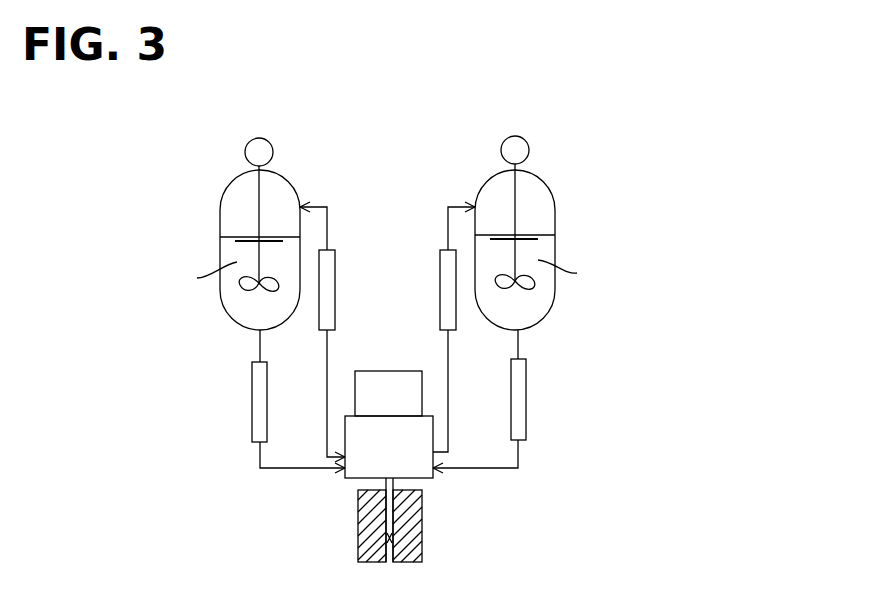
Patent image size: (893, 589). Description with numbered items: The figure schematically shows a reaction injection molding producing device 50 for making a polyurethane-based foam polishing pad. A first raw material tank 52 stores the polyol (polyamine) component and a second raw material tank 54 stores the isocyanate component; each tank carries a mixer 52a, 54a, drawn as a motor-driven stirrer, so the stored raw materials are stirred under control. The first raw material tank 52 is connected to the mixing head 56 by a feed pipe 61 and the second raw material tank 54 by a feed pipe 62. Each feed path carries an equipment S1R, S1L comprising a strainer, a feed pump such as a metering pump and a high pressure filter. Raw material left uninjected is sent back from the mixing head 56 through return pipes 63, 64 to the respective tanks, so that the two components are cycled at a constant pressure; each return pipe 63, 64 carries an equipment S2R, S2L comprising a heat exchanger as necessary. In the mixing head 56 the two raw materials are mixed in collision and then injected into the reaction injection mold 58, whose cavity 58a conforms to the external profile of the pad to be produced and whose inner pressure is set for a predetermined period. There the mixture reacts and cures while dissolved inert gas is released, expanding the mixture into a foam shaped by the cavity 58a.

The producing device 50 is at (128, 150).
The first raw material tank 52 is at (555, 207).
The mixer 52a is at (529, 148).
The second raw material tank 54 is at (220, 205).
The mixer 54a is at (245, 152).
The mixing head 56 is at (363, 472).
The reaction injection mold 58 is at (423, 530).
The cavity 58a is at (372, 558).
The feed pipe 61 is at (490, 468).
The feed pipe 62 is at (287, 471).
The return pipe 63 is at (457, 207).
The return pipe 64 is at (316, 207).
The equipment S1 S1L is at (258, 410).
The equipment S1 S1R is at (520, 408).
The equipment S2 S2L is at (336, 268).
The equipment S2 S2R is at (445, 268).